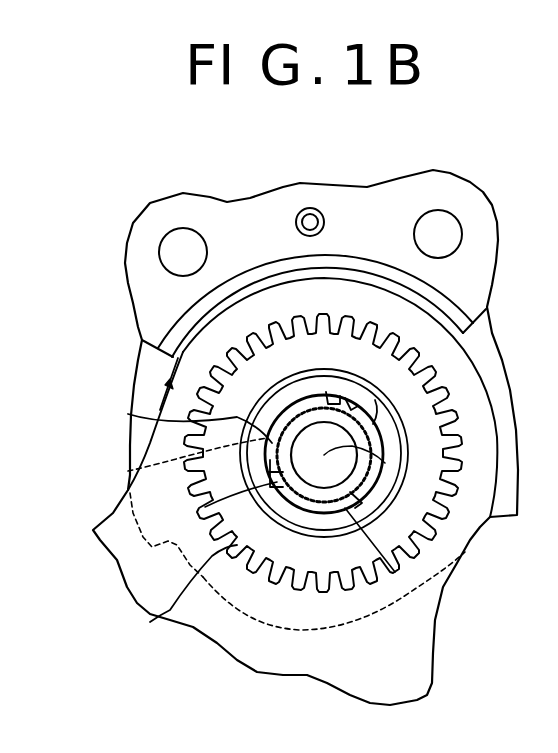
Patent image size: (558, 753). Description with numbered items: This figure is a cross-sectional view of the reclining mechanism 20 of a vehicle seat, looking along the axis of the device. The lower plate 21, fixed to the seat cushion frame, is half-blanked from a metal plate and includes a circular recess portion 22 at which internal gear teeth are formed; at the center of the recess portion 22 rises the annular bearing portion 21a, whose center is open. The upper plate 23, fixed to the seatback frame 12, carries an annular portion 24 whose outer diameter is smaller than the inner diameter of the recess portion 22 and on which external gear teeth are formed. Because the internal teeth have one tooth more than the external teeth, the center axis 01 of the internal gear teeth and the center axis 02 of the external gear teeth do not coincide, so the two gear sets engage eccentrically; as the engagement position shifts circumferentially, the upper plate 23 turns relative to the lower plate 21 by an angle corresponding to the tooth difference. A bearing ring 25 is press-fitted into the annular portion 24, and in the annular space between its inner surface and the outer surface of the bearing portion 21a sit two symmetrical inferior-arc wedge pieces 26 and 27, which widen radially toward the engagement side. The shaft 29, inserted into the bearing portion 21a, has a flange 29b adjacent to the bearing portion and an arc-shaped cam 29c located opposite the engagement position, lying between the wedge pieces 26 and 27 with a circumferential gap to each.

The seatback frame 12 is at (136, 265).
The reclining mechanism 20 is at (170, 385).
The lower plate 21 is at (428, 677).
The bearing portion 21a is at (205, 507).
The recess portion 22 is at (304, 592).
The upper plate 23 is at (494, 333).
The annular portion 24 is at (157, 618).
The bearing ring 25 is at (128, 414).
The wedge piece 26 is at (297, 389).
The wedge piece 27 is at (376, 399).
The shaft 29 is at (305, 443).
The flange 29b is at (128, 471).
The cam 29c is at (395, 575).
The center axis of the internal gear teeth 01 is at (324, 456).
The center axis of the external gear teeth 02 is at (385, 463).